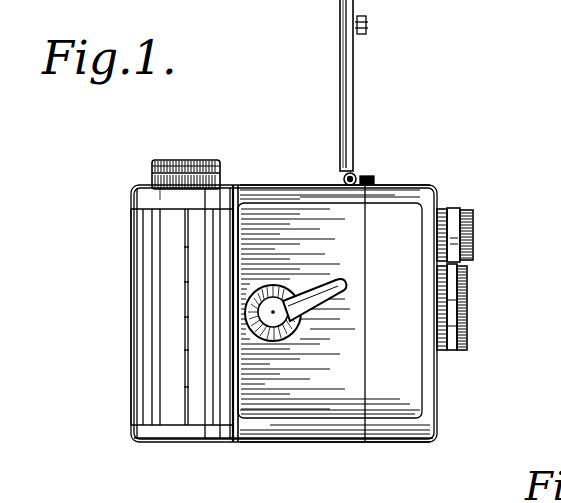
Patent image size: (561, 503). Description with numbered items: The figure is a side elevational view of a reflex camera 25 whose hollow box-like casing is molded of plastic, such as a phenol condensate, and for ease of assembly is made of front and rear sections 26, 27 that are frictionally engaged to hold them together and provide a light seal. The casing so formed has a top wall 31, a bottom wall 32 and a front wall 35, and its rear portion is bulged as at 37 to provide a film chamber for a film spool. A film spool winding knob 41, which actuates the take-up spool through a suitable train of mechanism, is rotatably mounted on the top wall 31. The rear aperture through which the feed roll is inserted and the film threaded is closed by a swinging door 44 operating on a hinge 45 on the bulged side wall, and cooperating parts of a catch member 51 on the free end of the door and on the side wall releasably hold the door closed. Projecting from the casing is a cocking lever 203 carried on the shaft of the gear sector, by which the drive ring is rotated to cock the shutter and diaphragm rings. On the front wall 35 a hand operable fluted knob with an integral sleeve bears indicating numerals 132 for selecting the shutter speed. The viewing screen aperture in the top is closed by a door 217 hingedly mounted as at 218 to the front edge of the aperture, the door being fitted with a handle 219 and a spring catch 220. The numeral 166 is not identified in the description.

The reflex camera 25 is at (458, 368).
The front section 26 is at (368, 291).
The rear section 27 is at (334, 312).
The top wall 31 is at (392, 188).
The bottom wall 32 is at (301, 438).
The front wall 35 is at (432, 410).
The bulged portion 37 is at (382, 498).
The film spool winding knob 41 is at (153, 168).
The door 44 is at (142, 348).
The hinge 45 is at (184, 394).
The catch member 51 is at (315, 480).
The indicating numerals 132 is at (455, 210).
The stop block 166 is at (368, 176).
The cocking lever 203 is at (276, 341).
The door 217 is at (356, 100).
The hinge 218 is at (343, 176).
The handle 219 is at (367, 22).
The spring catch 220 is at (190, 162).